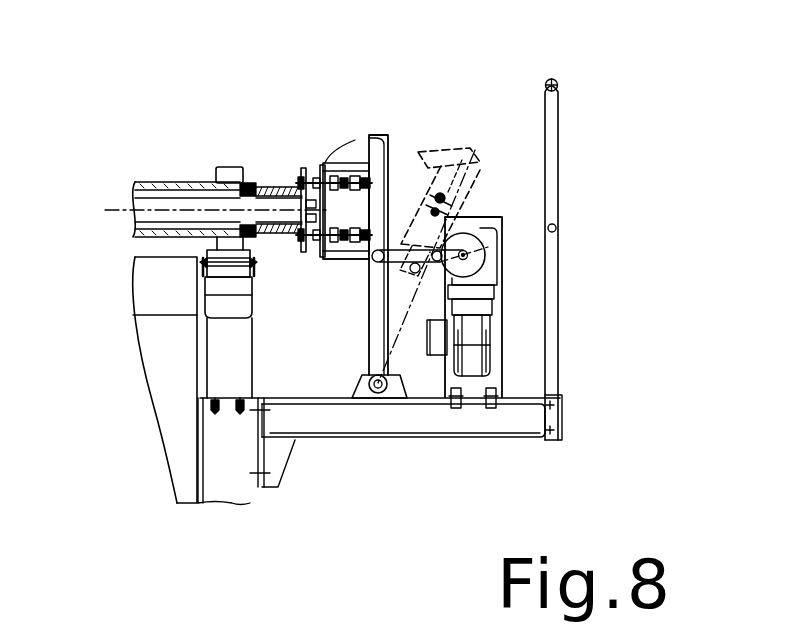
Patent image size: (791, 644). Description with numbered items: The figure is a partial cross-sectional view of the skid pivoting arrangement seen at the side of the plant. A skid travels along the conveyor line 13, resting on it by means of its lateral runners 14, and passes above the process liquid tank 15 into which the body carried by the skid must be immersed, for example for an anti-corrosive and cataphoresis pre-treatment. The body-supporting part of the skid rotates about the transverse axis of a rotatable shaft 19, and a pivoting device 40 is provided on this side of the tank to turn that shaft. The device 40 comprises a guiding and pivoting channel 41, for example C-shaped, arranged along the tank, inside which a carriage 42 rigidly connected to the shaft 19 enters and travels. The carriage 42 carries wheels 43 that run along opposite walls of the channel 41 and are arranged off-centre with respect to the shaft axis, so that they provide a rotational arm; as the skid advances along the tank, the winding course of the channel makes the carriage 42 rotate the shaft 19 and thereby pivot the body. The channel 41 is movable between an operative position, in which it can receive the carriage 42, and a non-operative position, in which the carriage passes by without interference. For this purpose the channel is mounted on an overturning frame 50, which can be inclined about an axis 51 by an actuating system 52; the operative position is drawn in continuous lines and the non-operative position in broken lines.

The conveyor line 13 is at (227, 276).
The lateral runners 14 is at (243, 167).
The process liquid tank 15 is at (168, 420).
The rotatable shaft 19 is at (176, 202).
The device 40 is at (432, 126).
The guiding and pivoting channel 41 is at (355, 165).
The carriage 42 is at (315, 232).
The wheels 43 is at (296, 175).
The overturning frame 50 is at (377, 325).
The axis 51 is at (402, 400).
The actuating system 52 is at (505, 240).